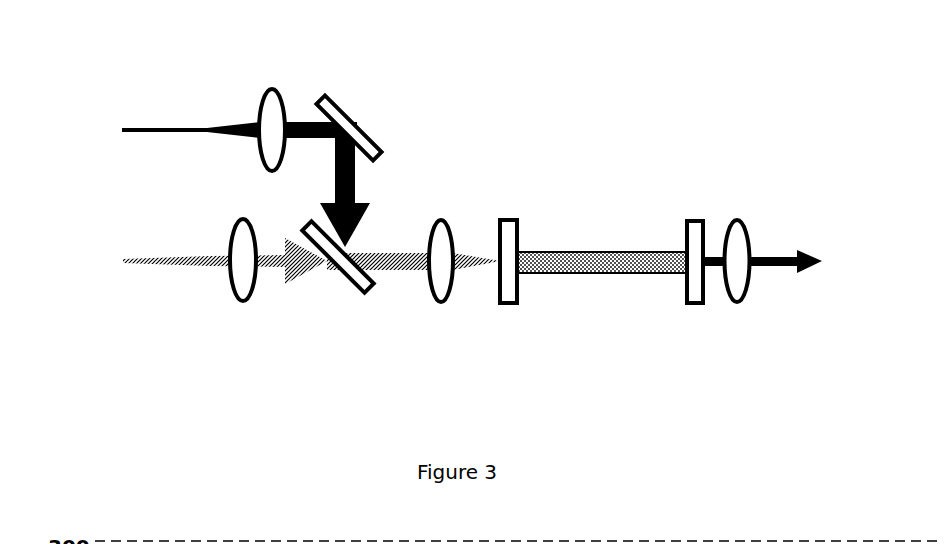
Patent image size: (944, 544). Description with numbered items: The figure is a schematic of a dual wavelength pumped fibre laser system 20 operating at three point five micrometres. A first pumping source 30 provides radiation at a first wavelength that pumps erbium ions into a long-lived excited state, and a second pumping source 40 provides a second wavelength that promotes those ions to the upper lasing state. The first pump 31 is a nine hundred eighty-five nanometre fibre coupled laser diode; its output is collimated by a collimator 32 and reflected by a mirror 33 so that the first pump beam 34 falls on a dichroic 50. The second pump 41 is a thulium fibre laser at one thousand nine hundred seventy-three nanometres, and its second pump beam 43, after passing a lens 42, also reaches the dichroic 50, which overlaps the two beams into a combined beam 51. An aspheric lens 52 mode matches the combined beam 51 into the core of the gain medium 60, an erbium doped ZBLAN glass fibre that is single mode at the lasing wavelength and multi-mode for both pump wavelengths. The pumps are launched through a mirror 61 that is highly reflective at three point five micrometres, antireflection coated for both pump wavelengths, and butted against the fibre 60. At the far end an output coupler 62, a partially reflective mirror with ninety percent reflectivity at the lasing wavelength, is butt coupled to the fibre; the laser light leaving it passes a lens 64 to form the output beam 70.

The laser system 20 is at (727, 80).
The first pumping source 30 is at (122, 70).
The first pump source 31 is at (113, 132).
The collimator 32 is at (270, 83).
The mirror 33 is at (365, 123).
The first pump beam 34 is at (358, 185).
The second pumping source 40 is at (123, 328).
The second pump source 41 is at (113, 261).
The seed lens 42 is at (243, 312).
The second pump beam 43 is at (310, 288).
The dichroic 50 is at (350, 295).
The combined beam 51 is at (413, 275).
The aspheric lens 52 is at (445, 217).
The gain medium 60 is at (605, 243).
The mirror 61 is at (507, 312).
The output coupler 62 is at (695, 312).
The collimating lens 64 is at (737, 312).
The output beam 70 is at (802, 243).